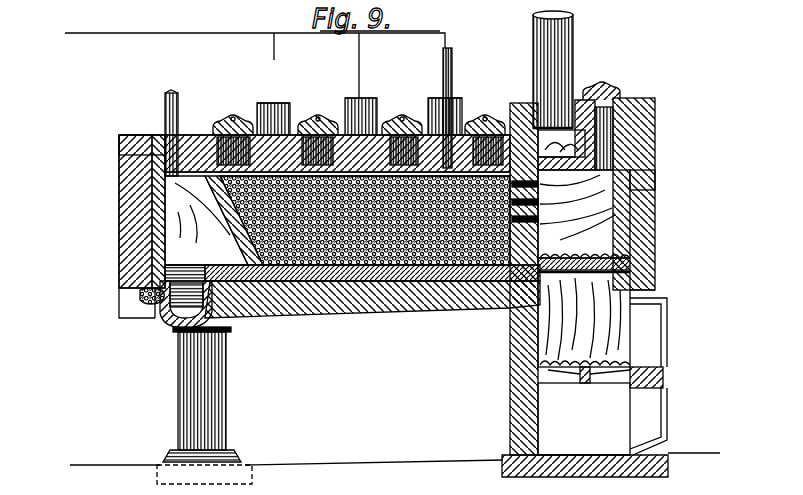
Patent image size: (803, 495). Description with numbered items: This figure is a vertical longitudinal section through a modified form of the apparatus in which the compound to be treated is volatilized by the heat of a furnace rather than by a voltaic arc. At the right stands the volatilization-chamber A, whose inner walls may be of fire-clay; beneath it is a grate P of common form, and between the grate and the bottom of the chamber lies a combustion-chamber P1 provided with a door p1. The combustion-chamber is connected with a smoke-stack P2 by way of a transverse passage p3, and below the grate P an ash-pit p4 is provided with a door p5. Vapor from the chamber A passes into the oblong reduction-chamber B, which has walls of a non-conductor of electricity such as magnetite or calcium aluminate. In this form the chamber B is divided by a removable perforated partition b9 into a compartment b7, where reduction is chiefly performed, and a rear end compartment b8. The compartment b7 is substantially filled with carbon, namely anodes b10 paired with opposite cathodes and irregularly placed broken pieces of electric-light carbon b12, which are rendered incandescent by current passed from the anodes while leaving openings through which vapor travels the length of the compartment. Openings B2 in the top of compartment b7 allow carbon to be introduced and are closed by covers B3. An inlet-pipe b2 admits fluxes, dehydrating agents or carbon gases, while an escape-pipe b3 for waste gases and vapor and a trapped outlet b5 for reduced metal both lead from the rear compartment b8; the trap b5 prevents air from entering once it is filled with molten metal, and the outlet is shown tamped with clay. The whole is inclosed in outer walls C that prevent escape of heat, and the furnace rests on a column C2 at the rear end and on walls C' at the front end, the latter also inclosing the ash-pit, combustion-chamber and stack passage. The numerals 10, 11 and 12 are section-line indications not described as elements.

The outer walls C is at (199, 226).
The escape-pipe b3 is at (178, 104).
The openings B2 is at (247, 118).
The post 11 is at (290, 101).
The anodes b10 is at (345, 118).
The covers B3 is at (360, 97).
The post 12 is at (403, 118).
The inlet-pipe b2 is at (459, 76).
The smoke-stack P2 is at (575, 62).
The transverse passage p3 is at (604, 144).
The casing wall 10 is at (120, 193).
The volatilization-chamber A is at (584, 214).
The rear end compartment b8 is at (206, 220).
The perforated partition b9 is at (246, 252).
The trap b5 is at (160, 322).
The reduction-chamber B is at (362, 311).
The compartment b7 is at (447, 312).
The broken pieces of carbon b12 is at (433, 312).
The walls C' is at (584, 279).
The column C2 is at (212, 422).
The combustion-chamber P1 is at (553, 320).
The door p1 is at (668, 335).
The ash-pit p4 is at (584, 436).
The grate P is at (548, 410).
The door p5 is at (643, 425).